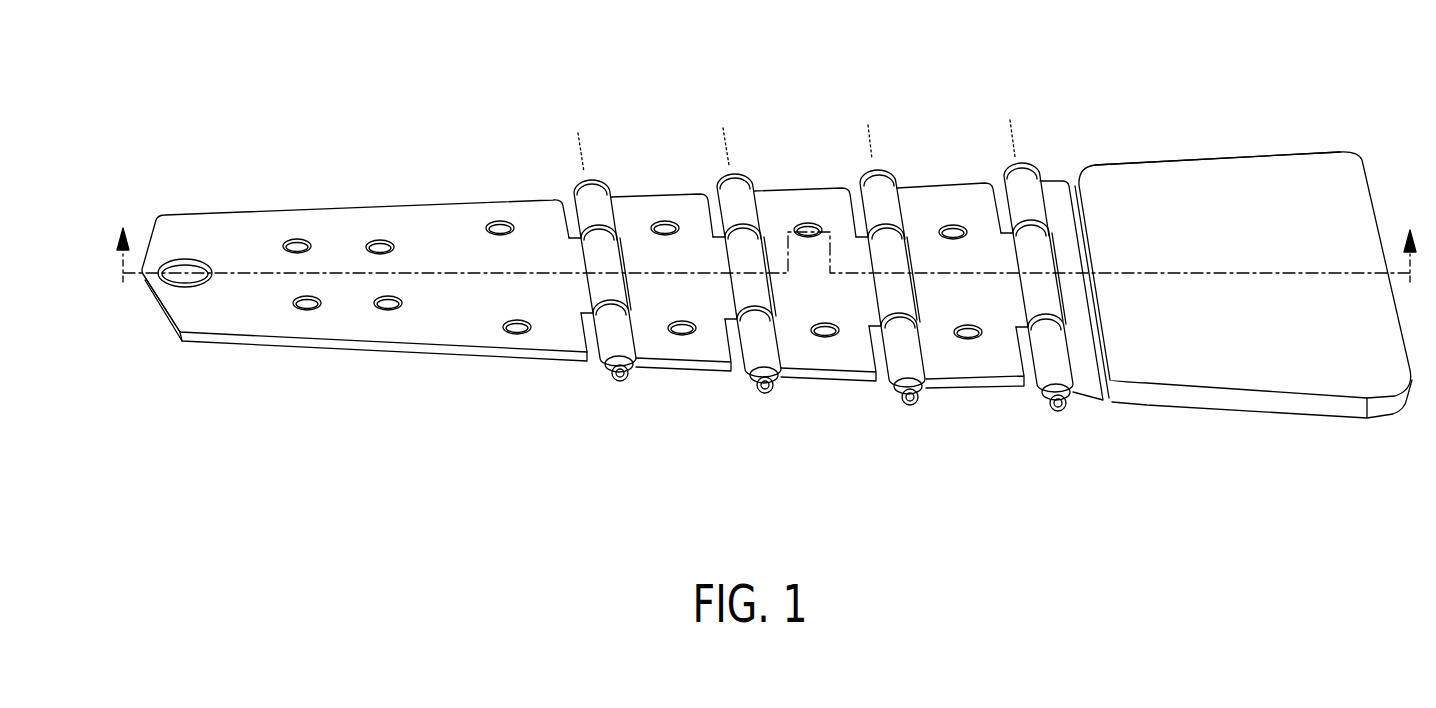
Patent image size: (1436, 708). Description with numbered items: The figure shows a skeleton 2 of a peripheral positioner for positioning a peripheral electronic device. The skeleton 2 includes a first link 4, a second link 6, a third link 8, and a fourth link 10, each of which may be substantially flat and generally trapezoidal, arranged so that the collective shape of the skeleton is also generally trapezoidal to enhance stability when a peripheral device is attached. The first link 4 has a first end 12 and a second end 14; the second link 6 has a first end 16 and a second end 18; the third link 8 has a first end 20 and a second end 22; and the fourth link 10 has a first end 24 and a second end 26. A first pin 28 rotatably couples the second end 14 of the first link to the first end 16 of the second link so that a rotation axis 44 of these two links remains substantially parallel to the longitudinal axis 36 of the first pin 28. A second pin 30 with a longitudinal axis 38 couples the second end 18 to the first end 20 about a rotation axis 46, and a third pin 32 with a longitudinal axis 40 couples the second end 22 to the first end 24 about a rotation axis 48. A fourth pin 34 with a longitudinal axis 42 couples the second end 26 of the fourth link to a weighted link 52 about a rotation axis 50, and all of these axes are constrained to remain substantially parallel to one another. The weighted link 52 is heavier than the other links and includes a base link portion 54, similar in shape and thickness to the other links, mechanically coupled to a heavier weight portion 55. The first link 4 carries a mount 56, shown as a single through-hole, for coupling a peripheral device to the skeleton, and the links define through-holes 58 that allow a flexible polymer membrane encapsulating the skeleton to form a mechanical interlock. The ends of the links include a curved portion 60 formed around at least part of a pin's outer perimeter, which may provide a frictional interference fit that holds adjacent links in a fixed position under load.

The skeleton 2 is at (196, 40).
The first link 4 is at (413, 203).
The second link 6 is at (662, 195).
The third link 8 is at (803, 189).
The fourth link 10 is at (950, 181).
The first end 12 is at (180, 332).
The second end 14 is at (586, 262).
The first end 16 is at (578, 195).
The second end 18 is at (735, 292).
The first end 20 is at (743, 188).
The second end 22 is at (880, 290).
The first end 24 is at (892, 181).
The second end 26 is at (1025, 298).
The first pin 28 is at (613, 375).
The second pin 30 is at (762, 388).
The third pin 32 is at (908, 401).
The fourth pin 34 is at (1052, 404).
The longitudinal axis 36 is at (620, 378).
The longitudinal axis 38 is at (766, 390).
The longitudinal axis 40 is at (910, 402).
The longitudinal axis 42 is at (1058, 408).
The rotation axis 44 is at (579, 153).
The rotation axis 46 is at (728, 151).
The rotation axis 48 is at (873, 151).
The rotation axis 50 is at (1016, 146).
The weighted link 52 is at (1358, 110).
The base link portion 54 is at (1105, 400).
The weight portion 55 is at (1135, 161).
The mount 56 is at (192, 260).
The through-holes 58 is at (292, 240).
The curved portion 60 is at (628, 335).